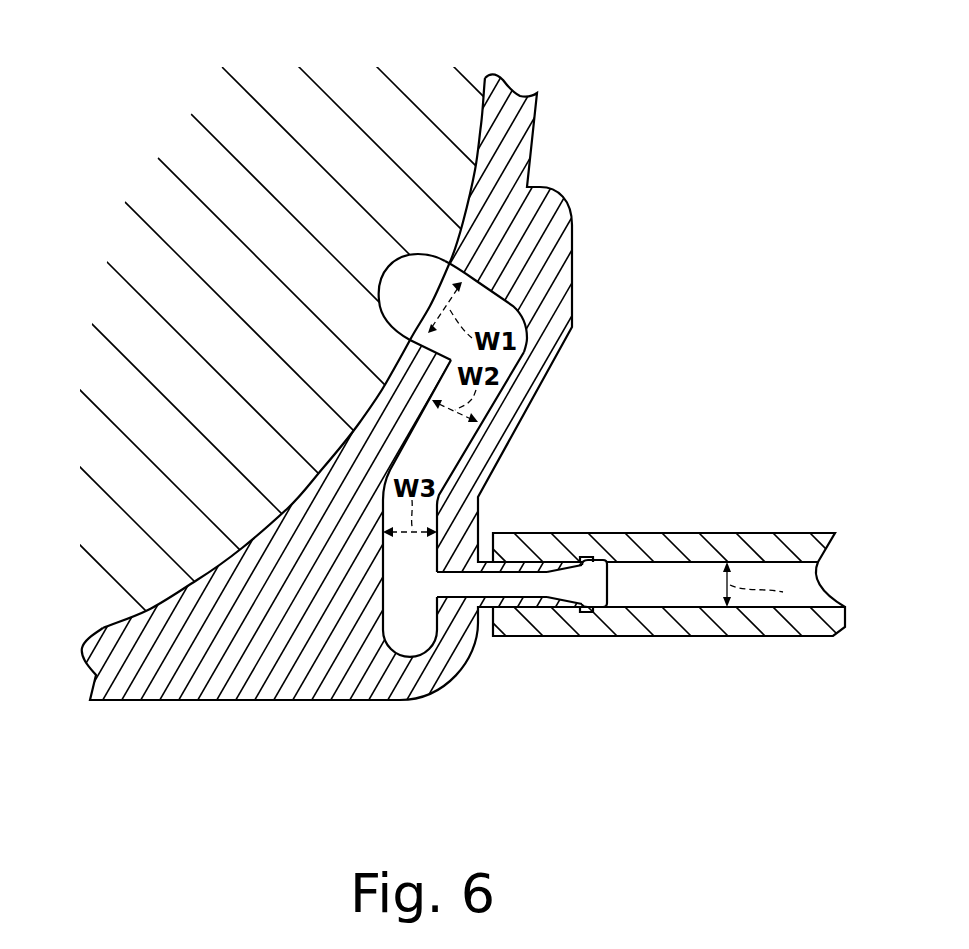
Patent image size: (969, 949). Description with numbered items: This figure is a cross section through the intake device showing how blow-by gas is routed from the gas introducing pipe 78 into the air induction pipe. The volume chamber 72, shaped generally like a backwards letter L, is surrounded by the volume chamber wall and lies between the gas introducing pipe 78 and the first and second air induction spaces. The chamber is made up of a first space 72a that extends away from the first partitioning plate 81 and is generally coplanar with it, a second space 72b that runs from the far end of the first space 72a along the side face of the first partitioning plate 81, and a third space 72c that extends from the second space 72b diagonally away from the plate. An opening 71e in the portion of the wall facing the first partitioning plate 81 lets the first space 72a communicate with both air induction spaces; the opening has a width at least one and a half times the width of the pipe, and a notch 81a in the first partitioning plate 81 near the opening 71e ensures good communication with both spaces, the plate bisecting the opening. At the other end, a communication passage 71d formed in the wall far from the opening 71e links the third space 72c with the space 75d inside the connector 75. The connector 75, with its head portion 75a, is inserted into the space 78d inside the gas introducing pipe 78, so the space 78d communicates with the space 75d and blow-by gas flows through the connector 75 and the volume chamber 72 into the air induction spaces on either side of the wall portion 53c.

The first partitioning plate 81 is at (207, 162).
The notch 81a is at (417, 262).
The communication passage 71d is at (463, 598).
The opening 71e is at (378, 296).
The volume chamber 72 is at (708, 211).
The first space 72a is at (487, 306).
The second space 72b is at (433, 463).
The third space 72c is at (390, 660).
The upper wall portion 53c is at (520, 124).
The connector 75 is at (538, 612).
The pin head 75a is at (612, 612).
The space inside the connector 75d is at (533, 588).
The gas introducing pipe 78 is at (697, 610).
The space inside the gas introducing pipe 78d is at (720, 607).